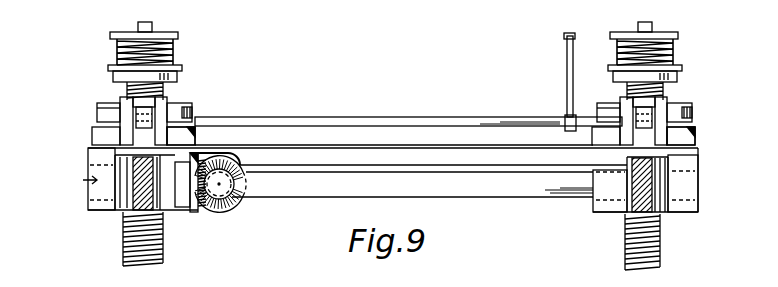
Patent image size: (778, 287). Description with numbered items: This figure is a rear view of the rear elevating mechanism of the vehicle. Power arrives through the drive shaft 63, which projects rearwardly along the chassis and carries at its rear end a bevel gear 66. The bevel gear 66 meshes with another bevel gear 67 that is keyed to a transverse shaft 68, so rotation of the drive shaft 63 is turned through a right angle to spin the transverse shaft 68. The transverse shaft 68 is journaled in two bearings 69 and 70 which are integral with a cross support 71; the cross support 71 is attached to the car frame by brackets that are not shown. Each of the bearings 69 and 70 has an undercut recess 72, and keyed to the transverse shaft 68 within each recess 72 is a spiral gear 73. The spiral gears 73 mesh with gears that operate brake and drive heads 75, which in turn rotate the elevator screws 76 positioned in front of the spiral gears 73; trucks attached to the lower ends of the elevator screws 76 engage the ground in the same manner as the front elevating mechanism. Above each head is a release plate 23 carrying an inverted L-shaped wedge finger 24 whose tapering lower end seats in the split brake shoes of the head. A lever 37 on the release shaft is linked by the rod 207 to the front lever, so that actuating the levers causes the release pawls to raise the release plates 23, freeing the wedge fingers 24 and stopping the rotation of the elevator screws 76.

The release plate 23 is at (108, 107).
The wedge finger 24 is at (133, 108).
The brake and drive head 75 is at (173, 137).
The cross support 71 is at (407, 148).
The lever 37 is at (567, 76).
The rod 207 is at (565, 40).
The undercut recess 72 is at (115, 155).
The bearing 69 is at (102, 212).
The spiral gear 73 is at (160, 160).
The elevator screw 76 is at (160, 240).
The bevel gear 67 is at (183, 208).
The bevel gear 66 is at (220, 208).
The drive shaft 63 is at (242, 212).
The transverse shaft 68 is at (300, 198).
The bearing 70 is at (603, 208).